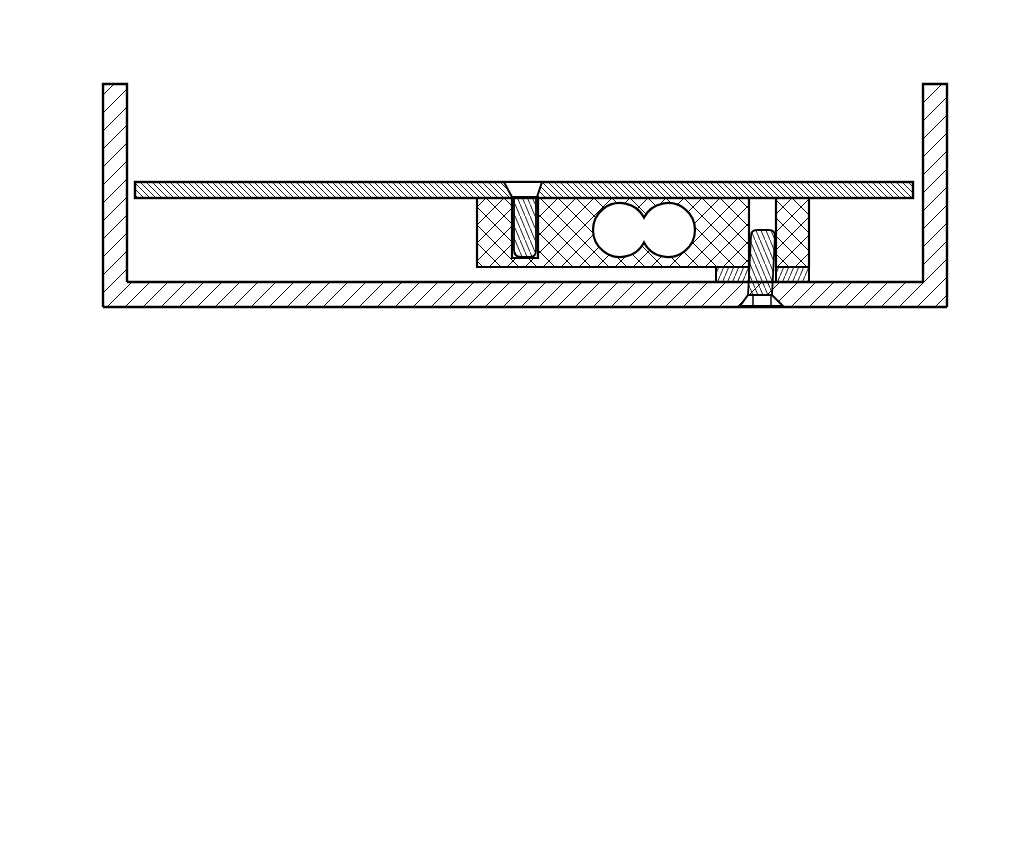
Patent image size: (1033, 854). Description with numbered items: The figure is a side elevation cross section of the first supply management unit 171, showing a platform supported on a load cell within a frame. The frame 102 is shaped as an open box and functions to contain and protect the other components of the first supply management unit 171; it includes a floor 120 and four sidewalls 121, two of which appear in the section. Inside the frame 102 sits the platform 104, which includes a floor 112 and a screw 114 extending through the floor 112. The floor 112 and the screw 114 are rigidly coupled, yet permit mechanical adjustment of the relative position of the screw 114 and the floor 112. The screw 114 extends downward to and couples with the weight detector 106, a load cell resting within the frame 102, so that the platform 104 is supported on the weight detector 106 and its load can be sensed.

The first supply management unit 171 is at (69, 74).
The frame 102 is at (90, 223).
The sidewalls 121 is at (122, 137).
The floor 120 is at (212, 287).
The platform 104 is at (283, 162).
The floor 112 is at (362, 187).
The weight detector 106 is at (465, 240).
The screw 114 is at (537, 182).